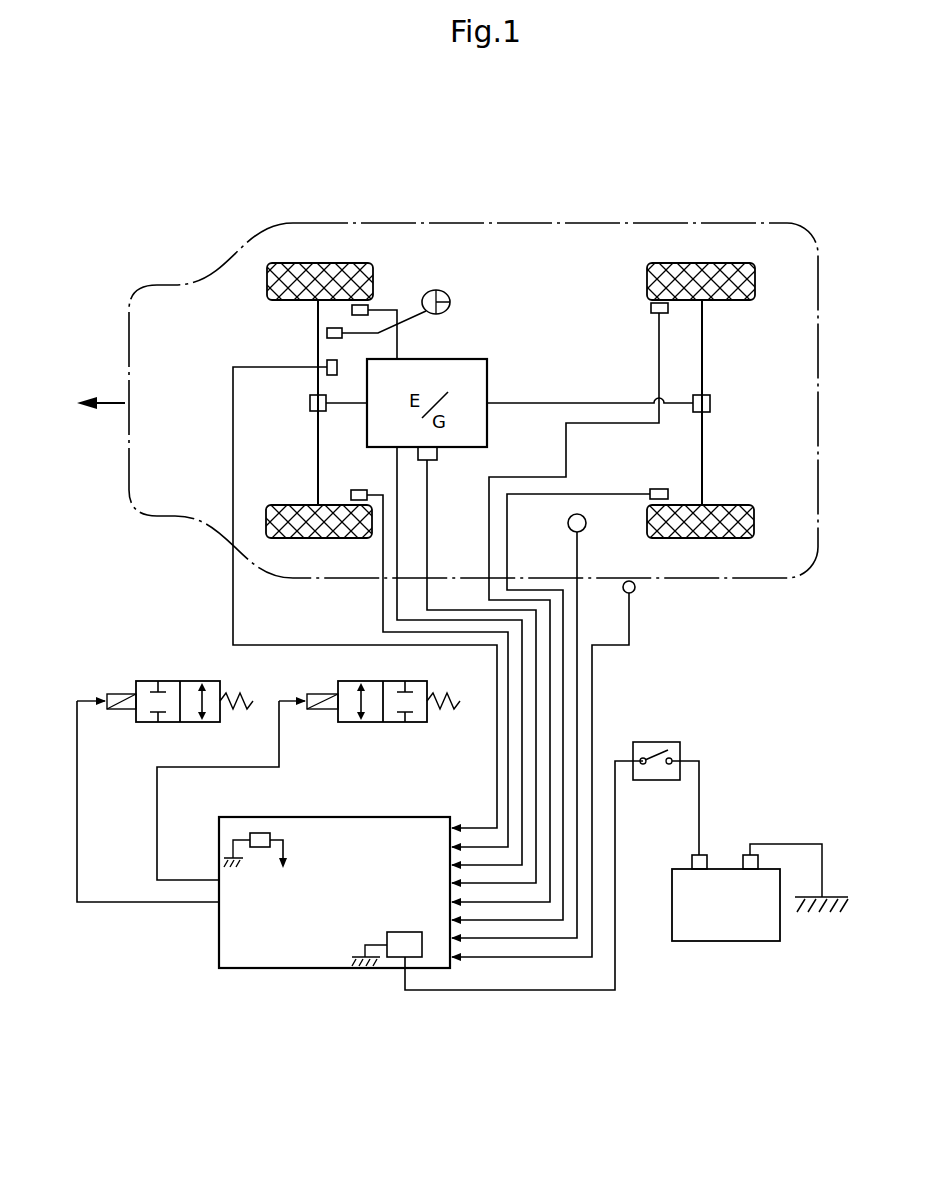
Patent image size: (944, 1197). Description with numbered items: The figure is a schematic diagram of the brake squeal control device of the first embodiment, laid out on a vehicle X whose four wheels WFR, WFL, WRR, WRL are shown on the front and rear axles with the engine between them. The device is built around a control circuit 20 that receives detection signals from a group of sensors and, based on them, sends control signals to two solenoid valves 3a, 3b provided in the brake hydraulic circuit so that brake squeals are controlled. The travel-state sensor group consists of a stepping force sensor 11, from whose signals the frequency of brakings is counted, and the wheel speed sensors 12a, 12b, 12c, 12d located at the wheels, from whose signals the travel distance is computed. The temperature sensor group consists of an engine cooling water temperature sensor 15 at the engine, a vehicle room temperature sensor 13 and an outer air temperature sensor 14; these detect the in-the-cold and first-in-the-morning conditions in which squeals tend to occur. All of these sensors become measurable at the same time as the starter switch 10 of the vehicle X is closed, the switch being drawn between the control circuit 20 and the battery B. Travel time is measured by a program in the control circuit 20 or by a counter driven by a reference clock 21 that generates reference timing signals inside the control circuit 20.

The vehicle X is at (495, 222).
The front right wheel WFR is at (308, 268).
The rear right wheel WRR is at (693, 268).
The front left wheel WFL is at (309, 528).
The rear left wheel WRL is at (710, 530).
The stepping force sensor 11 is at (323, 362).
The wheel speed sensor 12a is at (370, 305).
The wheel speed sensor 12b is at (357, 490).
The wheel speed sensor 12c is at (651, 305).
The wheel speed sensor 12d is at (660, 489).
The vehicle room temperature sensor 13 is at (569, 527).
The outer air temperature sensor 14 is at (635, 592).
The engine cooling water temperature sensor 15 is at (437, 455).
The starter switch 10 is at (663, 742).
The control circuit 20 is at (220, 965).
The reference clock 21 is at (267, 817).
The solenoid valve 3a is at (150, 681).
The solenoid valve 3b is at (413, 681).
The battery B is at (760, 892).